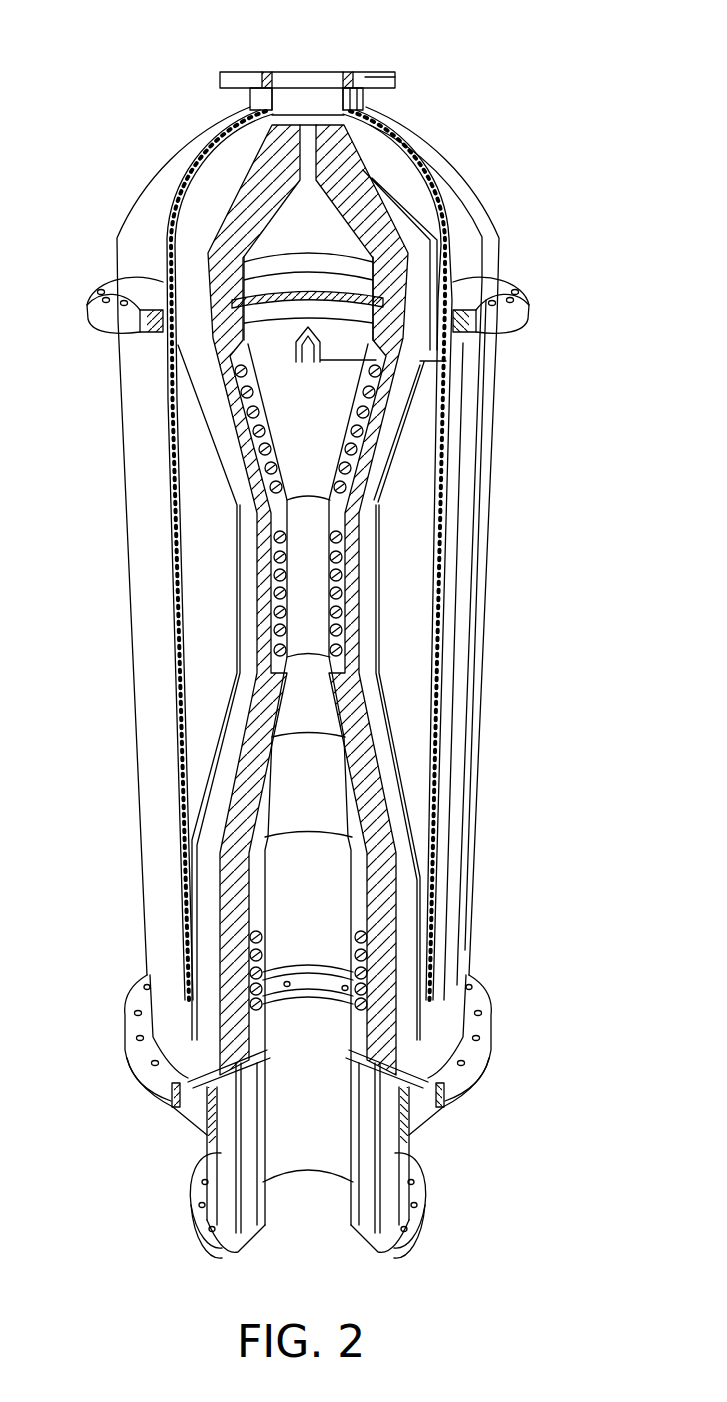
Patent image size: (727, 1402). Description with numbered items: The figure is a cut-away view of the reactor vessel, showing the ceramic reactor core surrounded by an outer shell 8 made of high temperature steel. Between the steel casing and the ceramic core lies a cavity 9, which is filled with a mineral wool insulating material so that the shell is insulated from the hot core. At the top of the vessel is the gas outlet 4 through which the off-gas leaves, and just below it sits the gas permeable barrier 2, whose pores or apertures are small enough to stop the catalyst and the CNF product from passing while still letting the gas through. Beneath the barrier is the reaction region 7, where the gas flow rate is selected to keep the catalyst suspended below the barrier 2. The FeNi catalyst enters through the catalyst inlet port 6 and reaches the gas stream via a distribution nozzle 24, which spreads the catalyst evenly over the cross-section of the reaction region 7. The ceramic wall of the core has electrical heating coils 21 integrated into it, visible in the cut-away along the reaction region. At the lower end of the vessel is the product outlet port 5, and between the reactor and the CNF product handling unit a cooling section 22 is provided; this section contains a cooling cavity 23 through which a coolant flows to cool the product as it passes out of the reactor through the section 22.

The gas permeable barrier 2 is at (336, 283).
The gas outlet 4 is at (305, 86).
The product outlet port 5 is at (303, 1200).
The catalyst inlet port 6 is at (427, 365).
The reaction region 7 is at (292, 452).
The outer shell 8 is at (472, 933).
The cavity 9 is at (408, 563).
The electrical heating coils 21 is at (272, 574).
The cooling section 22 is at (193, 1182).
The cooling cavity 23 is at (360, 1193).
The distribution nozzle 24 is at (300, 362).